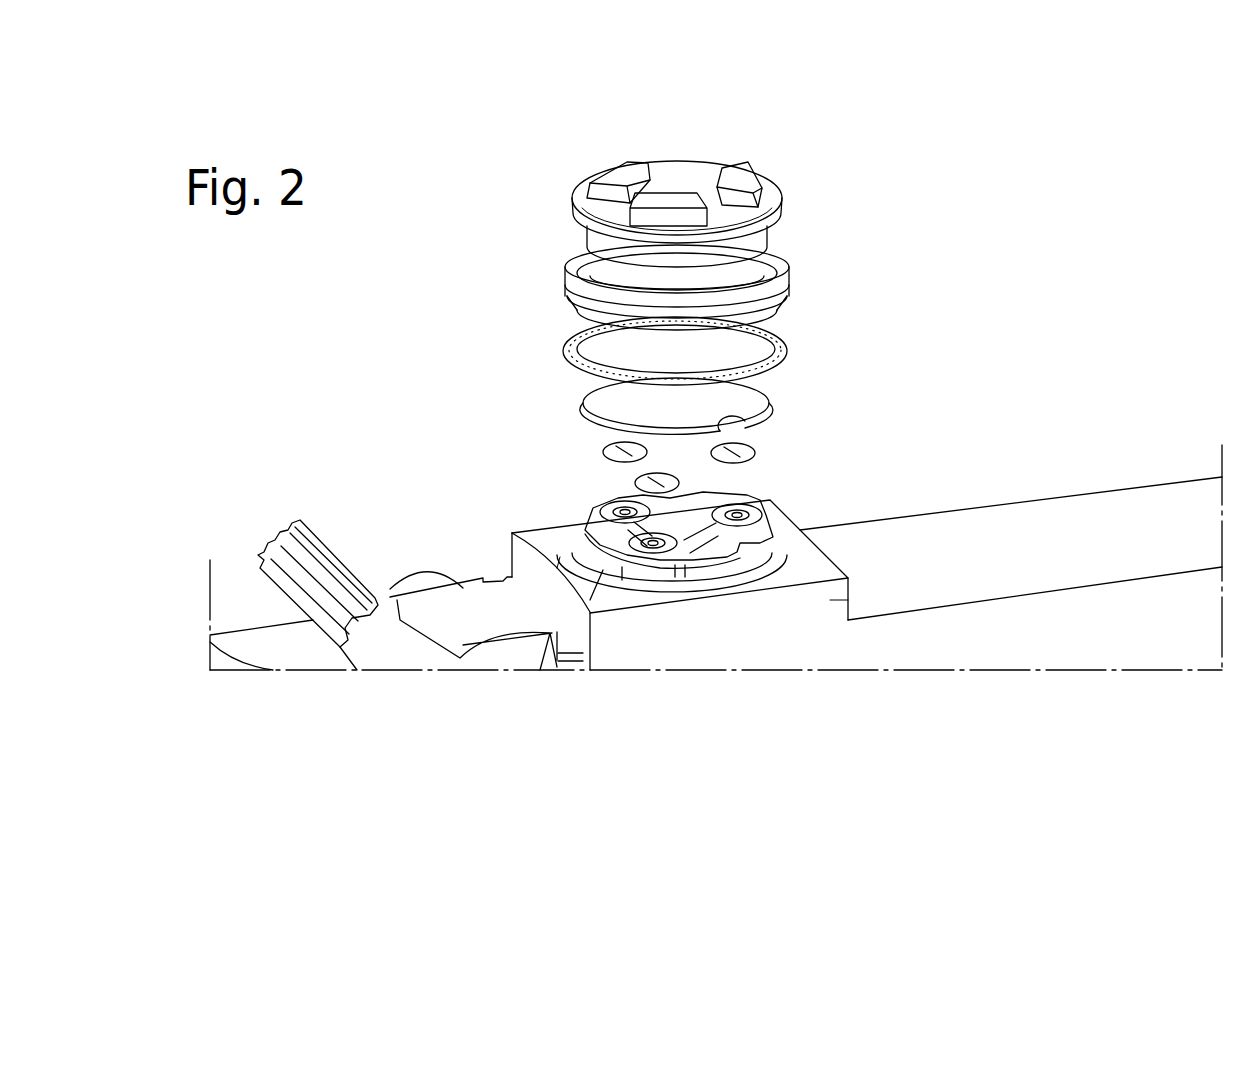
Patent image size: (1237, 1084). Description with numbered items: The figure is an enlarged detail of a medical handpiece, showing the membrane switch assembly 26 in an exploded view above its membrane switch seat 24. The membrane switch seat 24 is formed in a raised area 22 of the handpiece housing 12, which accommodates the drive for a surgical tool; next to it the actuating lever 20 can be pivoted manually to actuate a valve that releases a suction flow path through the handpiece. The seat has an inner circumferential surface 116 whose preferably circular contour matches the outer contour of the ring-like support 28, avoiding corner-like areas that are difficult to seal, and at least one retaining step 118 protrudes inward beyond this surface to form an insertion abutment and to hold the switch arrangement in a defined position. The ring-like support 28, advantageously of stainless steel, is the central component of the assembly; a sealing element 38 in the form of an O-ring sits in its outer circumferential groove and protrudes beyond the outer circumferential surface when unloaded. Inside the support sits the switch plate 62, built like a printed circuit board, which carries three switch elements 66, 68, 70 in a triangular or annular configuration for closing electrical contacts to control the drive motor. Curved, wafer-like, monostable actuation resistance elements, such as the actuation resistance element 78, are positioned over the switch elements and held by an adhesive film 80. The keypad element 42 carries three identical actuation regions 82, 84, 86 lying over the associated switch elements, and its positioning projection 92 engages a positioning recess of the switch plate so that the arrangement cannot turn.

The handpiece housing 12 is at (1077, 523).
The actuating lever 20 is at (275, 525).
The raised area 22 is at (833, 600).
The membrane switch seat 24 is at (673, 585).
The membrane switch assembly 26 is at (893, 147).
The ring-like support 28 is at (788, 297).
The sealing element 38 is at (790, 345).
The keypad element 42 is at (787, 215).
The switch plate 62 is at (590, 515).
The switch element 66 is at (618, 510).
The switch element 68 is at (712, 560).
The switch element 70 is at (752, 513).
The actuation resistance element 78 is at (760, 450).
The adhesive film 80 is at (583, 400).
The actuation region 82 is at (607, 168).
The actuation region 84 is at (585, 213).
The actuation region 86 is at (740, 162).
The positioning projection 92 is at (780, 245).
The inner circumferential surface 116 is at (510, 547).
The retaining step 118 is at (603, 562).